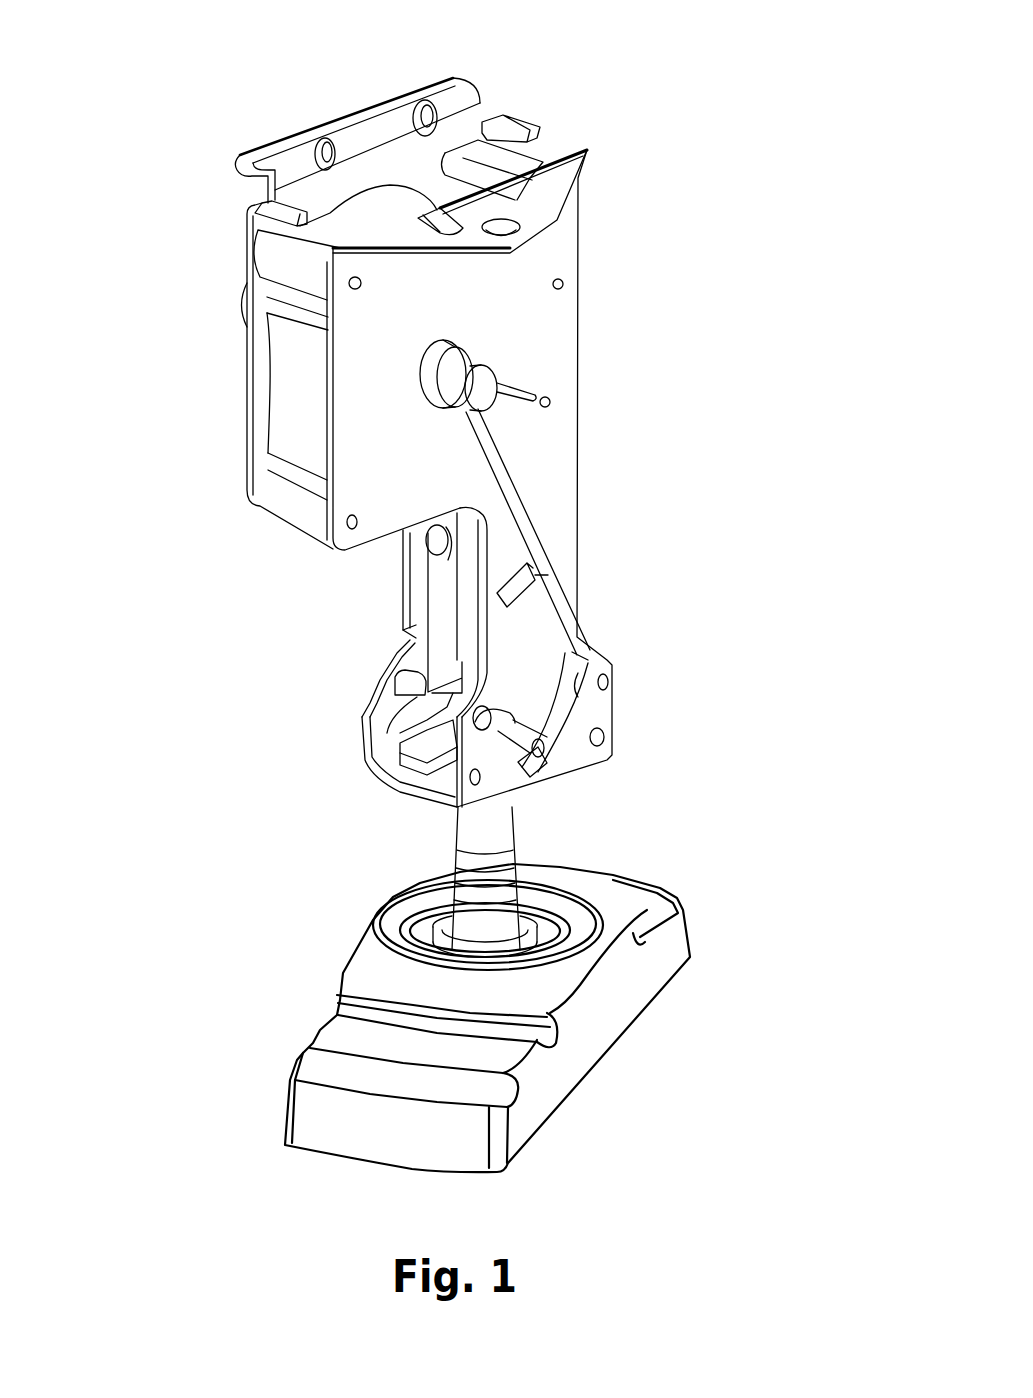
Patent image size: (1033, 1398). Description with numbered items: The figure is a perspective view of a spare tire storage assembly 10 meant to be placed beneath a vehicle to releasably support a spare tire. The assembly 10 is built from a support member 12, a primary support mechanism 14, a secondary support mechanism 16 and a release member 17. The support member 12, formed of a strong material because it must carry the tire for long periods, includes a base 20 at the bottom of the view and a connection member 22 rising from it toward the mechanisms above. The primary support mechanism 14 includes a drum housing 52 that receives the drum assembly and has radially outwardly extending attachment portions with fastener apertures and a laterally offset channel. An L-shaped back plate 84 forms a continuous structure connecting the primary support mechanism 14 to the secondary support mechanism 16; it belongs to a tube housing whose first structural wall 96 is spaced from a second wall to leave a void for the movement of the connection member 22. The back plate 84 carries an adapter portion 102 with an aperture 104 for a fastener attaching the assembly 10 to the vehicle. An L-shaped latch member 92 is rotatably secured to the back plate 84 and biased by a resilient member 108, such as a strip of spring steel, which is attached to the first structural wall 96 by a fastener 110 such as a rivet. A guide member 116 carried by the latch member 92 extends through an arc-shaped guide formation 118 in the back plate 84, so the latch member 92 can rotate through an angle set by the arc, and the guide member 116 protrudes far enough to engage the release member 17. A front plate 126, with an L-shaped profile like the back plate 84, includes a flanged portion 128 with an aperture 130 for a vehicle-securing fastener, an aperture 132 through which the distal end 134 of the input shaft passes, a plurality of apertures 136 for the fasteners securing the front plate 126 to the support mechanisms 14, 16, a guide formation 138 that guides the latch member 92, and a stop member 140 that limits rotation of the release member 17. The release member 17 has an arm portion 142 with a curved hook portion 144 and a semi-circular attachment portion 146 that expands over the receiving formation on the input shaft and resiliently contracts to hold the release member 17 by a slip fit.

The spare tire storage assembly 10 is at (225, 122).
The support member 12 is at (358, 912).
The primary support mechanism 14 is at (290, 535).
The secondary support mechanism 16 is at (367, 707).
The release member 17 is at (525, 488).
The base 20 is at (620, 1000).
The connection member 22 is at (470, 912).
The drum housing 52 is at (278, 383).
The back plate 84 is at (480, 125).
The latch member 92 is at (410, 758).
The first structural wall 96 is at (426, 590).
The adapter portion 102 is at (300, 136).
The aperture 104 is at (422, 100).
The resilient member 108 is at (435, 723).
The fastener 110 is at (432, 545).
The guide member 116 is at (540, 747).
The guide formation 118 is at (403, 682).
The front plate 126 is at (558, 255).
The flanged portion 128 is at (540, 190).
The aperture 130 is at (498, 236).
The aperture 132 is at (437, 348).
The distal end 134 is at (488, 385).
The apertures 136 is at (565, 284).
The guide formation 138 is at (487, 712).
The stop member 140 is at (564, 582).
The arm portion 142 is at (532, 545).
The hook portion 144 is at (606, 660).
The attachment portion 146 is at (470, 365).